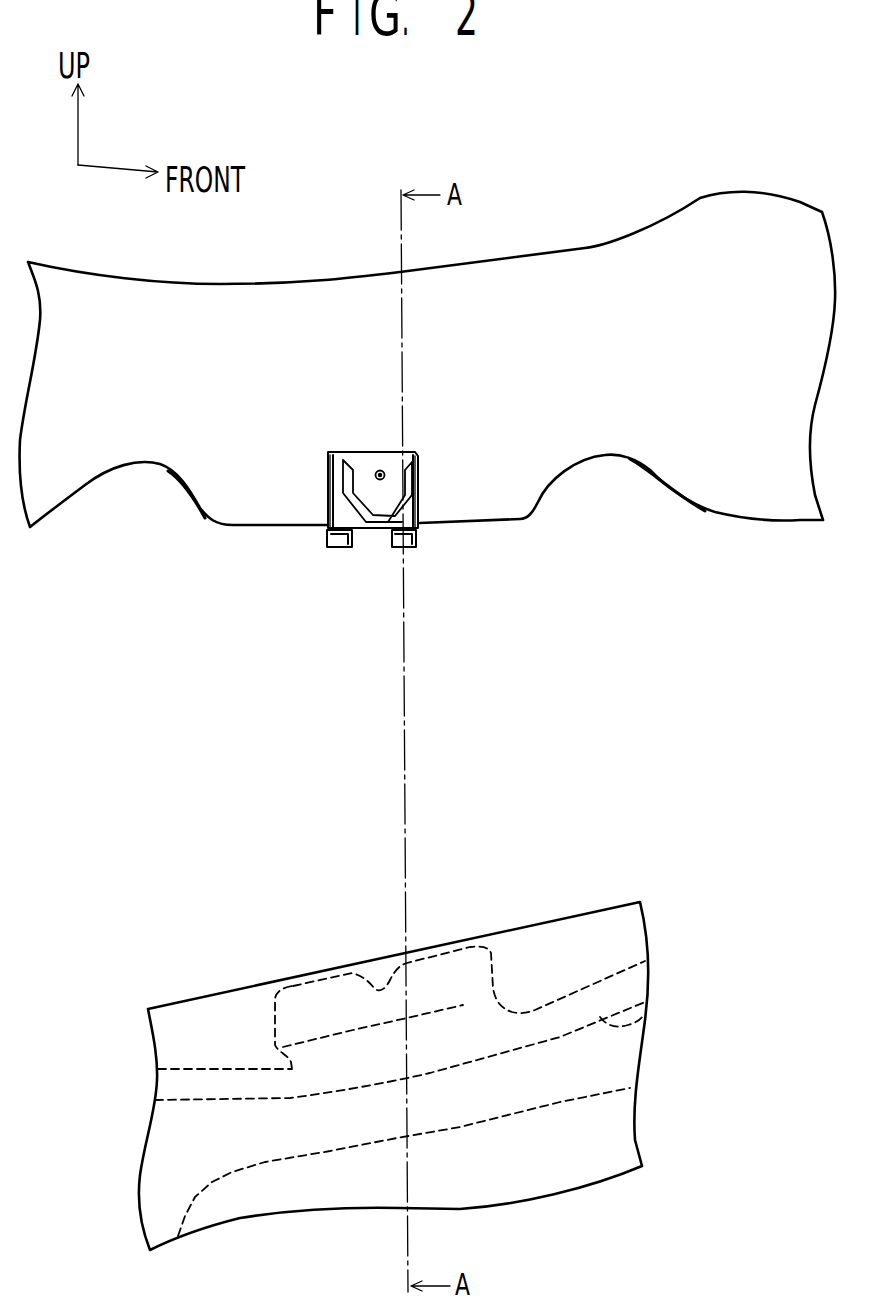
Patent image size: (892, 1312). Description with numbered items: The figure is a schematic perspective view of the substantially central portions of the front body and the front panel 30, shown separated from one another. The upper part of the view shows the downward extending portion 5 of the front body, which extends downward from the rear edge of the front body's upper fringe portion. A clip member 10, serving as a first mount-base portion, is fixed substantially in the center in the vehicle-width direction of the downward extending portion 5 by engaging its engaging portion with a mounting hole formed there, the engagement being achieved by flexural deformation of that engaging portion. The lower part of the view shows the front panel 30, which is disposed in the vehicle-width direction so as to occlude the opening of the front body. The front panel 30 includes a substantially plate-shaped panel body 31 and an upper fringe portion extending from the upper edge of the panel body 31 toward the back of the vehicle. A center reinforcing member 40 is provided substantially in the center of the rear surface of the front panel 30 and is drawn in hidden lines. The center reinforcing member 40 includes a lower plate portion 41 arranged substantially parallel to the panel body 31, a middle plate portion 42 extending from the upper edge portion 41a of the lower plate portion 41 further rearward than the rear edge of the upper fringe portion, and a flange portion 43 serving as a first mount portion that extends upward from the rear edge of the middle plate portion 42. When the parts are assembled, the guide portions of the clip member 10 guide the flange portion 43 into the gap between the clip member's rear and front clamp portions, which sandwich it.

The downward extending portion 5 is at (277, 508).
The clip member 10 is at (420, 533).
The front panel 30 is at (578, 896).
The panel body 31 is at (614, 1137).
The center reinforcing member 40 is at (235, 1068).
The lower plate portion 41 is at (615, 1055).
The upper edge portion 41a is at (644, 1022).
The middle plate portion 42 is at (487, 1002).
The flange portion 43 is at (442, 972).